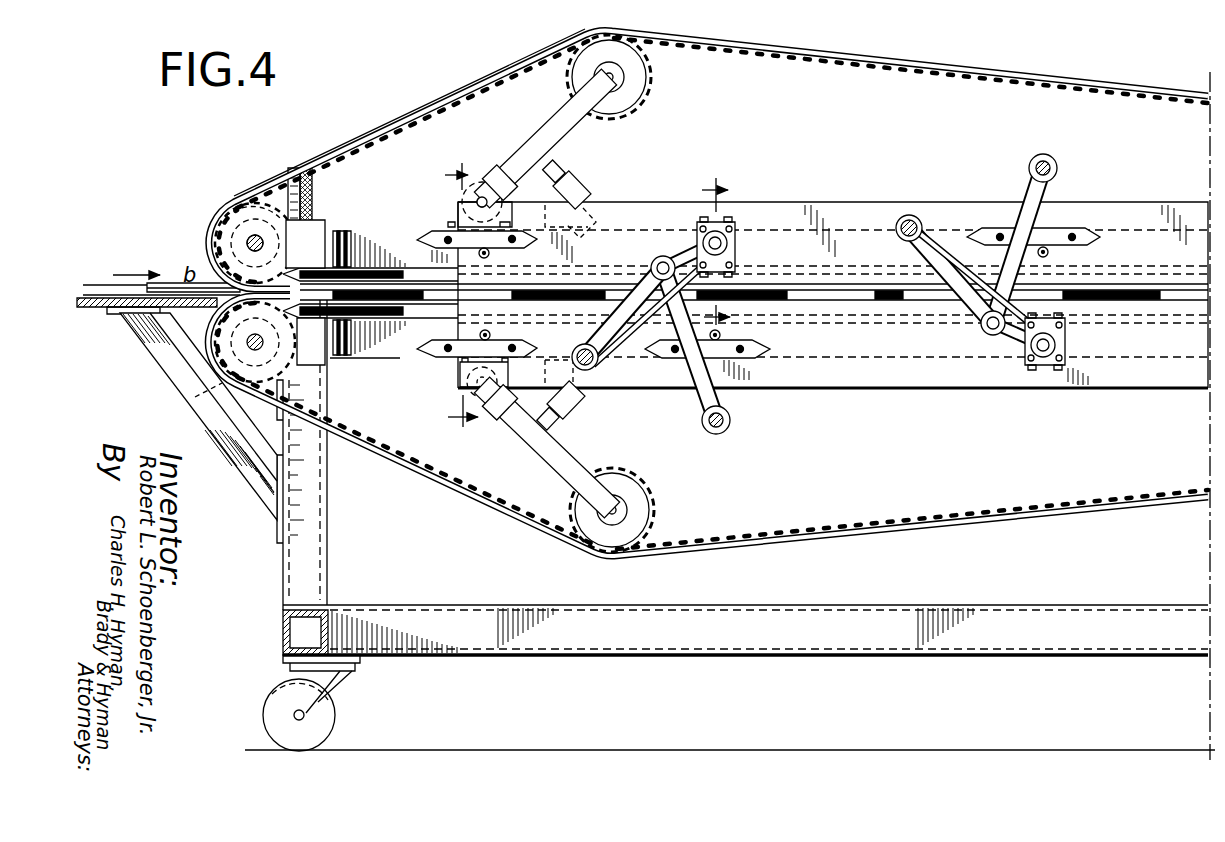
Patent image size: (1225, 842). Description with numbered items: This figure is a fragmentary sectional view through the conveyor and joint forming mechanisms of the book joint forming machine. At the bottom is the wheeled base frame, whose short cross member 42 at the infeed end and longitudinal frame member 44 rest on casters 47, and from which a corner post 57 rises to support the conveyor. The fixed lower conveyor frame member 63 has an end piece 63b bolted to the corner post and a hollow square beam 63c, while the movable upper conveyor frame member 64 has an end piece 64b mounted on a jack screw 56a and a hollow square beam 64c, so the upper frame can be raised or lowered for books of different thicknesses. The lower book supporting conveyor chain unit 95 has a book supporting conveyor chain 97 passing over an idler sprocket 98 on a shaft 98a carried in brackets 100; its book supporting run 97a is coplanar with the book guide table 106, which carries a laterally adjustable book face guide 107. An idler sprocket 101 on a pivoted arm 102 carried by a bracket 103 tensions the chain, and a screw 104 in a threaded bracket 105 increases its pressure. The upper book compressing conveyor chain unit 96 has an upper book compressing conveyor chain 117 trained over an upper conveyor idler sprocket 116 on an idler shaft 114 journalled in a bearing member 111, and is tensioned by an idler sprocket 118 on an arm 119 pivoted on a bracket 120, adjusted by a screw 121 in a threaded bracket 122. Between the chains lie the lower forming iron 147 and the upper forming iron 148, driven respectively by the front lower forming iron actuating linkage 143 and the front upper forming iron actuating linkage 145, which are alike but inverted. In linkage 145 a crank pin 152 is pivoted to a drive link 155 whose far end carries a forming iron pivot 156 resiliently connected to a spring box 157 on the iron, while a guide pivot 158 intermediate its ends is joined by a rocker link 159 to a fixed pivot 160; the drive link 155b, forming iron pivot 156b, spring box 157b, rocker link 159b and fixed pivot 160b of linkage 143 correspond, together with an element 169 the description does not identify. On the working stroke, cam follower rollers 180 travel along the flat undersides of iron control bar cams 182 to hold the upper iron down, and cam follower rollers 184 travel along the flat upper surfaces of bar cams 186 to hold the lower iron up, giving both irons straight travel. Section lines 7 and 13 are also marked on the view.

The section line 7- 7 is at (461, 298).
The section line 13- 13 is at (728, 250).
The short cross member 42 is at (282, 622).
The longitudinal frame member 44 is at (935, 607).
The casters 47 is at (328, 718).
The jack screw 56a is at (300, 166).
The corner post 57 is at (317, 552).
The lower conveyor frame member 63 is at (400, 360).
The end piece 63b is at (333, 360).
The hollow square beam 63c is at (365, 358).
The upper conveyor frame member 64 is at (368, 232).
The end piece 64b is at (339, 229).
The hollow square beam 64c is at (347, 240).
The lower book supporting conveyor chain unit 95 is at (215, 380).
The upper book compressing conveyor chain unit 96 is at (348, 140).
The book supporting conveyor chain 97 is at (410, 475).
The book supporting run 97a is at (754, 313).
The idler sprocket 98 is at (210, 355).
The shaft 98a is at (245, 345).
The brackets 100 is at (205, 395).
The idler sprocket 101 is at (626, 480).
The pivoted arm 102 is at (525, 440).
The bracket 103 is at (460, 370).
The screw 104 is at (562, 420).
The threaded bracket 105 is at (575, 402).
The book guide table 106 is at (80, 310).
The book face guide 107 is at (100, 284).
The bearing member 111 is at (215, 212).
The upper conveyor idler shaft 114 is at (247, 243).
The upper conveyor idler sprocket 116 is at (240, 210).
The upper book compressing conveyor chain 117 is at (418, 108).
The idler sprocket 118 is at (640, 83).
The arm 119 is at (560, 112).
The bracket 120 is at (458, 225).
The screw 121 is at (560, 165).
The threaded bracket 122 is at (582, 183).
The front lower forming iron actuating linkage 143 is at (1006, 271).
The front upper forming iron actuating linkage 145 is at (670, 340).
The lower forming iron 147 is at (895, 378).
The upper forming iron 148 is at (905, 210).
The crank pin 152 is at (600, 362).
The drive link 155 is at (597, 342).
The drive link 155b is at (915, 242).
The forming iron pivot 156 is at (735, 245).
The forming iron pivot 156b is at (1050, 368).
The spring box 157 is at (735, 228).
The spring box 157b is at (1068, 340).
The guide pivot 158 is at (655, 258).
The rocker link 159 is at (730, 412).
The rocker link 159b is at (1055, 190).
The fixed pivot 160 is at (712, 435).
The fixed pivot 160b is at (1055, 160).
The link 169 is at (922, 225).
The cam follower rollers 180 is at (495, 255).
The iron control bar cams 182 is at (420, 240).
The cam follower rollers 184 is at (490, 335).
The bar cams 186 is at (390, 348).